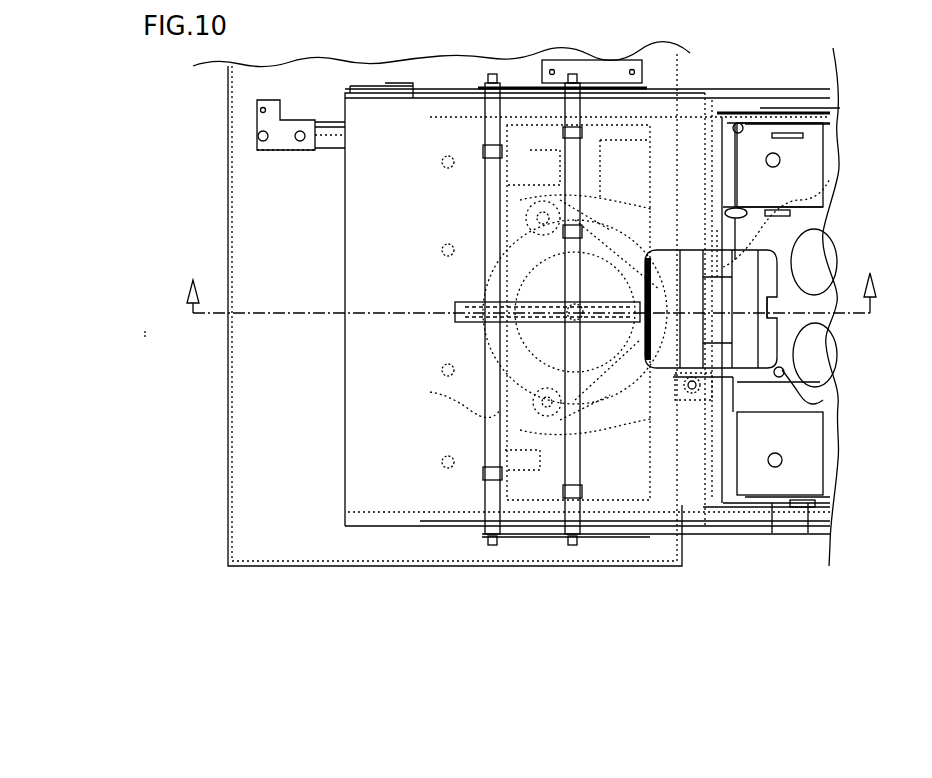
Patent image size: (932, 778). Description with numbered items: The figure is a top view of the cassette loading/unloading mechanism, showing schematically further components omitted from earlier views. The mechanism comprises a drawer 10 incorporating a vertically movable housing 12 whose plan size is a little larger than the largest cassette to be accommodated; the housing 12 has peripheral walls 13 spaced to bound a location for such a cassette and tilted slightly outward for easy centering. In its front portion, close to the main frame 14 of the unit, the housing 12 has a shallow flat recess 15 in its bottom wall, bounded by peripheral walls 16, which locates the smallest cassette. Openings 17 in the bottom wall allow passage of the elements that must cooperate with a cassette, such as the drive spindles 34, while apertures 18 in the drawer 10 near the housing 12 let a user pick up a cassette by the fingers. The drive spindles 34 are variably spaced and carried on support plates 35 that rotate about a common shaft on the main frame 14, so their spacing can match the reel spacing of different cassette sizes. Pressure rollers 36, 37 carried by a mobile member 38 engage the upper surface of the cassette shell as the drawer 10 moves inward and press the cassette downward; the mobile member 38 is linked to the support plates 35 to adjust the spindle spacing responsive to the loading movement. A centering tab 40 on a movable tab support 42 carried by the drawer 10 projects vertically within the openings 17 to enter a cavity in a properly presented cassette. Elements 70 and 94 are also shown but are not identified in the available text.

The drawer 10 is at (745, 539).
The vertically movable housing 12 is at (822, 437).
The peripheral walls 13 is at (833, 122).
The main frame 14 is at (260, 234).
The shallow flat recess 15 is at (820, 220).
The peripheral walls 16 is at (753, 206).
The openings 17 is at (775, 374).
The apertures 18 is at (808, 372).
The drive spindles 34 is at (503, 210).
The support plates 35 is at (470, 300).
The pressure roller 36 is at (493, 517).
The pressure roller 37 is at (573, 467).
The mobile member 38 is at (610, 541).
The centering tab 40 is at (773, 273).
The movable tab support 42 is at (690, 330).
The bracket 70 is at (355, 150).
The belt 94 is at (830, 178).